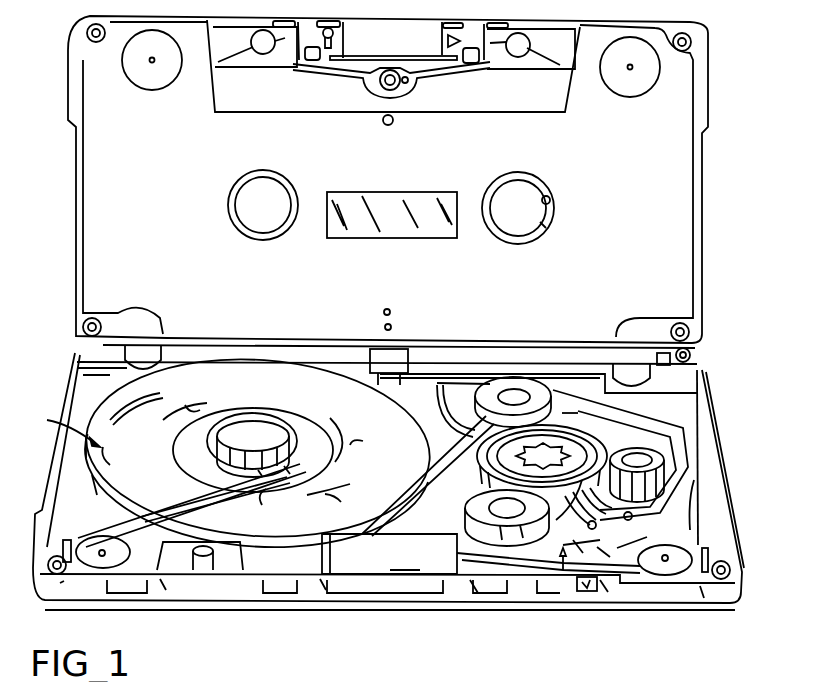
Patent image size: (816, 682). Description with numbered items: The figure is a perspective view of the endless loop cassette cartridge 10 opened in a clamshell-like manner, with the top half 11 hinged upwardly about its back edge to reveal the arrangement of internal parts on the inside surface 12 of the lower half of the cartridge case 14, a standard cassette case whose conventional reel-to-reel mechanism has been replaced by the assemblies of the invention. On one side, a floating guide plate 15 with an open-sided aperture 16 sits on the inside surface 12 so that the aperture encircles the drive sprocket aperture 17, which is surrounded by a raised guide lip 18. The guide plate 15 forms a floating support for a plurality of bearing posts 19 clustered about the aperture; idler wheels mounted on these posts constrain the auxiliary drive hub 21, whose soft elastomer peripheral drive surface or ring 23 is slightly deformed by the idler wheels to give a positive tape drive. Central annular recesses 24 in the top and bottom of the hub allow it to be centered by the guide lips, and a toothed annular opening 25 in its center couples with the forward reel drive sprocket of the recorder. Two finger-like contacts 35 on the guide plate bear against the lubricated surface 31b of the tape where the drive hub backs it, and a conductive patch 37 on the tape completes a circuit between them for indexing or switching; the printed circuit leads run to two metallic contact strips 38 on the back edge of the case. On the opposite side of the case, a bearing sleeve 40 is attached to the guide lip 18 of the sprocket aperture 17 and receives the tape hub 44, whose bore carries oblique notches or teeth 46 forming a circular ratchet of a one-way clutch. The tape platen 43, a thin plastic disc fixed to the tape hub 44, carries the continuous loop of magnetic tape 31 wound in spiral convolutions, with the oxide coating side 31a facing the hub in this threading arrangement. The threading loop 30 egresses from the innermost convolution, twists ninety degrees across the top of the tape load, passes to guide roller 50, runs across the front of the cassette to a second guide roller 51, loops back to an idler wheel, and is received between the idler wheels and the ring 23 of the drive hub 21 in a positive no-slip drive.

The endless loop cassette cartridge 10 is at (746, 398).
The top half 11 is at (413, 171).
The inside surface 12 is at (428, 411).
The cartridge case 14 is at (691, 355).
The floating guide plate 15 is at (698, 493).
The open-sided aperture 16 is at (565, 536).
The drive sprocket aperture 17 is at (549, 197).
The raised guide lip 18 is at (266, 445).
The bearing posts 19 is at (511, 393).
The drive hub 21 is at (570, 403).
The peripheral drive surface or ring 23 is at (428, 476).
The central annular recesses 24 is at (630, 406).
The toothed annular opening 25 is at (577, 442).
The threading loop 30 is at (563, 572).
The continuous loop of magnetic tape 31 is at (148, 463).
The oxide coating side 31a is at (193, 499).
The lubricated surface 31b is at (210, 576).
The finger-like contacts 35 is at (632, 517).
The conductive patch 37 is at (593, 594).
The metallic contact strips 38 is at (392, 358).
The bearing sleeve 40 is at (291, 440).
The tape platen 43 is at (120, 514).
The tape hub 44 is at (313, 456).
The notches or teeth 46 is at (293, 470).
The guide roller 50 is at (103, 570).
The second guide roller 51 is at (672, 575).